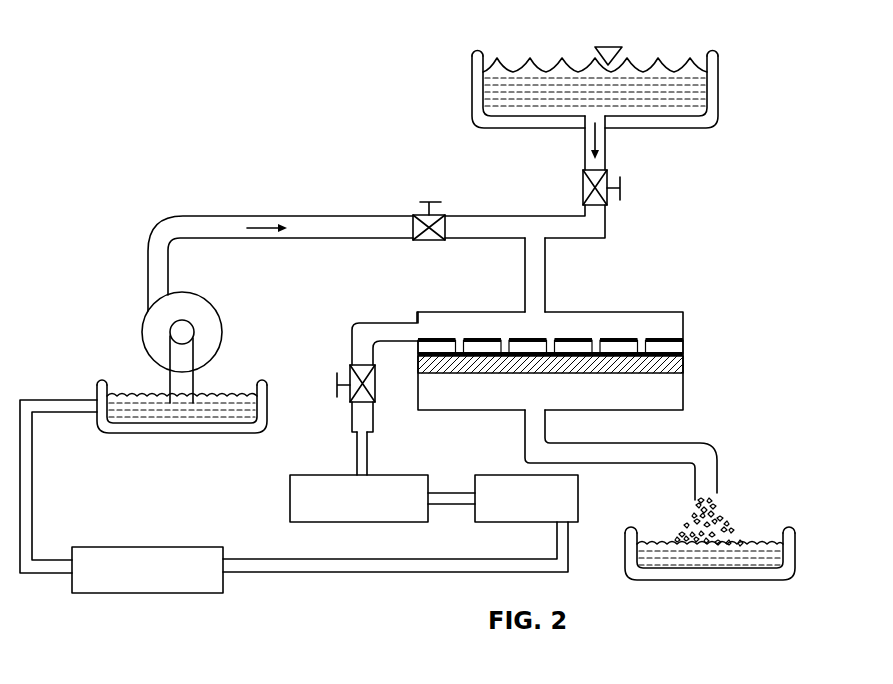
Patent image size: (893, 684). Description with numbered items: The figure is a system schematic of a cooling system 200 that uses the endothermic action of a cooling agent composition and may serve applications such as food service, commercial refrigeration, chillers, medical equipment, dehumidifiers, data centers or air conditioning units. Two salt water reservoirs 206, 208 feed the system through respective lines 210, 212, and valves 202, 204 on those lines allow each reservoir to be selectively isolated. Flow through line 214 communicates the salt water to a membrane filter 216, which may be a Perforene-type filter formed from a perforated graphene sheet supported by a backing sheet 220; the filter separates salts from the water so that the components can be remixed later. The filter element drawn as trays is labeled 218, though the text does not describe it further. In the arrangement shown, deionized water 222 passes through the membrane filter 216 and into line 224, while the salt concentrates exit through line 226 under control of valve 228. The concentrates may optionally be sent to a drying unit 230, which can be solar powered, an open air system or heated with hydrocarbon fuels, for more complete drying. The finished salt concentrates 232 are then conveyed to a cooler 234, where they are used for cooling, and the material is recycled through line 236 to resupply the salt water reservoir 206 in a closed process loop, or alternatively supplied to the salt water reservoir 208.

The cooling system 200 is at (375, 144).
The valve 202 is at (580, 193).
The valve 204 is at (437, 240).
The salt water reservoir 206 is at (135, 398).
The salt water reservoir 208 is at (726, 83).
The line 210 is at (242, 215).
The line 212 is at (607, 148).
The line 214 is at (540, 270).
The membrane filter 216 is at (672, 325).
The trays 218 is at (685, 343).
The backing sheet 220 is at (685, 363).
The deionized water 222 is at (750, 537).
The line 224 is at (646, 439).
The line 226 is at (358, 337).
The valve 228 is at (350, 393).
The drying unit 230 is at (292, 495).
The finished salt concentrates 232 is at (488, 522).
The cooler 234 is at (153, 547).
The line 236 is at (32, 482).